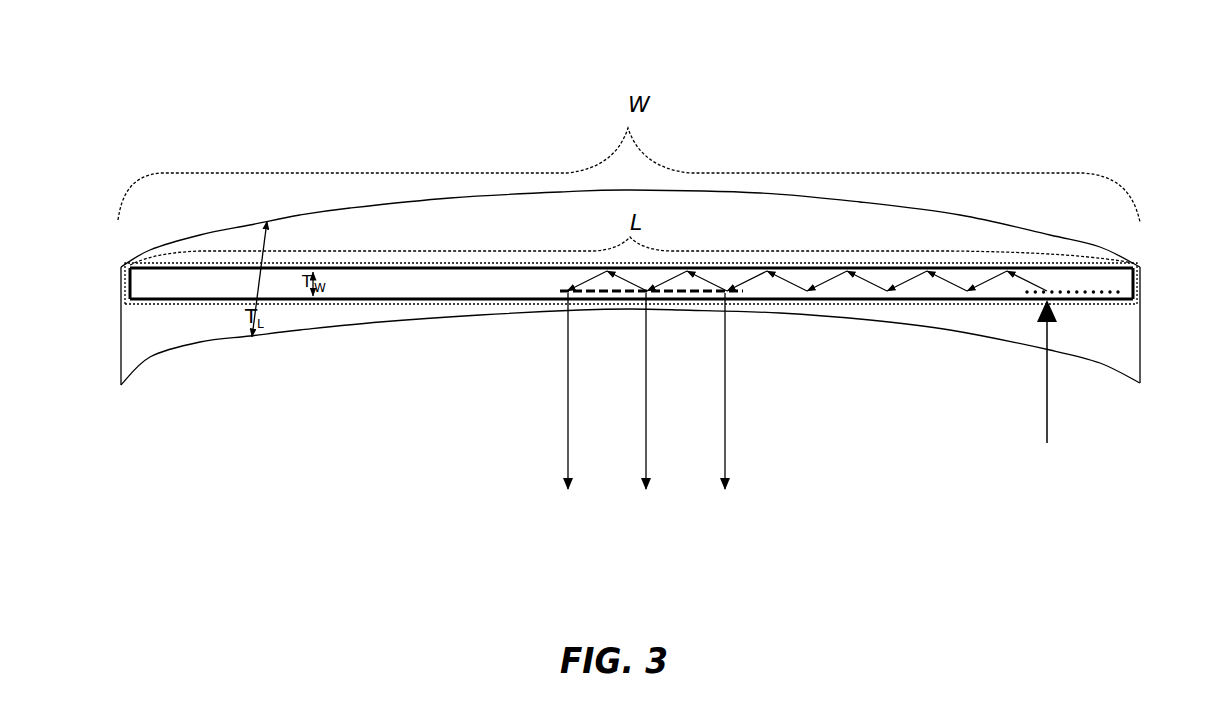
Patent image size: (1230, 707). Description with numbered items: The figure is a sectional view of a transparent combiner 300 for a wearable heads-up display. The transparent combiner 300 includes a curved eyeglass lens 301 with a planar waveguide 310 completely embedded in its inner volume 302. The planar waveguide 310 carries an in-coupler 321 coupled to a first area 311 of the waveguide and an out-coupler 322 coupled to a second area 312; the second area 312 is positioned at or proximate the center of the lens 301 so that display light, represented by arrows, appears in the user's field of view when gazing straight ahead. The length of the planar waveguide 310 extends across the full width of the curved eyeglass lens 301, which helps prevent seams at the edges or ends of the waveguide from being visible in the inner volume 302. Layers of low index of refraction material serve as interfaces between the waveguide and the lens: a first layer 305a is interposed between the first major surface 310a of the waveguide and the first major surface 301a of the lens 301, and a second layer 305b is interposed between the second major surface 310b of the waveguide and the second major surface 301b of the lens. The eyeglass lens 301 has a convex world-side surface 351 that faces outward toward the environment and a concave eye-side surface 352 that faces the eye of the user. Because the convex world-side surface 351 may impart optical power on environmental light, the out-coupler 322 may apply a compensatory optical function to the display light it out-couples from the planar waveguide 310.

The transparent combiner 300 is at (157, 100).
The curved eyeglass lens 301 is at (140, 340).
The first major surface of the lens 301a is at (747, 193).
The second major surface of the lens 301b is at (872, 322).
The inner volume 302 is at (508, 241).
The first layer of low index of refraction material 305a is at (890, 263).
The second layer of low index of refraction material 305b is at (1005, 302).
The planar waveguide 310 is at (1125, 280).
The first major surface of the waveguide 310a is at (800, 267).
The second major surface of the waveguide 310b is at (933, 300).
The first area 311 is at (1085, 300).
The second area 312 is at (613, 300).
The in-coupler 321 is at (1085, 293).
The out-coupler 322 is at (710, 297).
The world-side surface 351 is at (212, 232).
The eye-side surface 352 is at (356, 326).